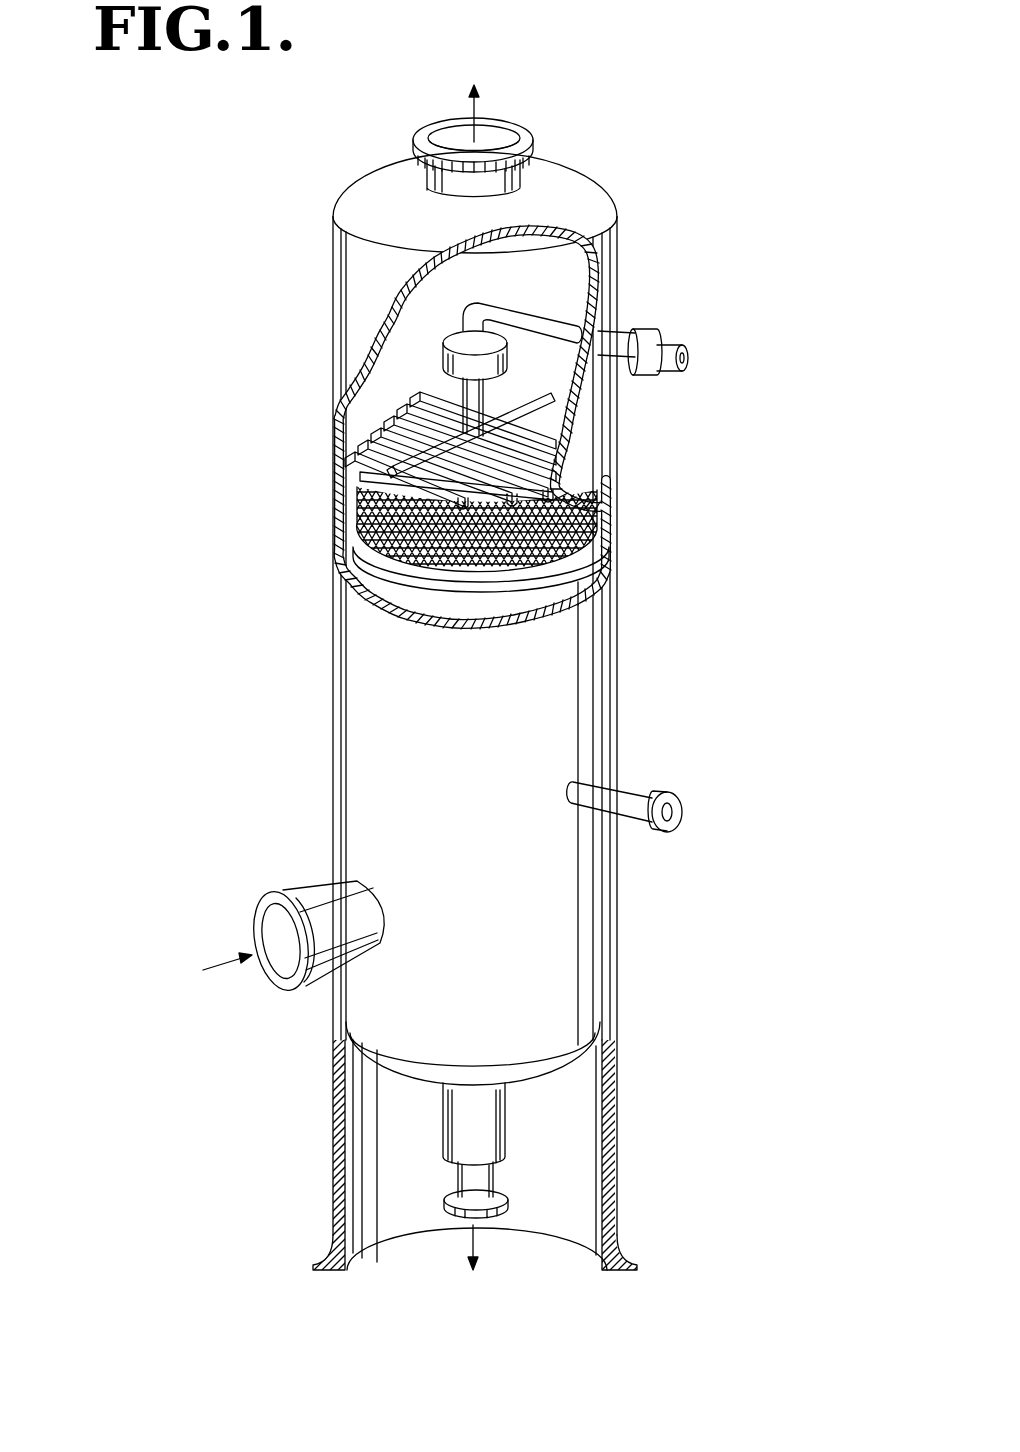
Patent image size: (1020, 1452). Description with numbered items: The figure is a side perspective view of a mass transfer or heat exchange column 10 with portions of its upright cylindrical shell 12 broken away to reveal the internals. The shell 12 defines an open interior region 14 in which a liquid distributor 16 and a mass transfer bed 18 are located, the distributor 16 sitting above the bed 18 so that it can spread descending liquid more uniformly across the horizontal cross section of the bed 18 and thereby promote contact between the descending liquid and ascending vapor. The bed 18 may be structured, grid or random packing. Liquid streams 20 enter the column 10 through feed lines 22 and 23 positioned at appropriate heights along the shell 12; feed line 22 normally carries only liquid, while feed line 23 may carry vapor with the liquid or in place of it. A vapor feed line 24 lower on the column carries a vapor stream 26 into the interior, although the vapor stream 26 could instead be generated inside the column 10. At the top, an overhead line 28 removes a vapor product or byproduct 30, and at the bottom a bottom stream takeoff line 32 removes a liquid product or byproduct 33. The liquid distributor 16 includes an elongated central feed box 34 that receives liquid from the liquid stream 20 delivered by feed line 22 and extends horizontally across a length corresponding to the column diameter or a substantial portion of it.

The mass transfer column 10 is at (658, 137).
The cylindrical shell 12 is at (616, 246).
The open interior region 14 is at (551, 265).
The liquid distributor 16 is at (404, 412).
The mass transfer bed 18 is at (598, 507).
The liquid stream 20 is at (693, 367).
The feed line 22 is at (630, 328).
The feed line 23 is at (640, 783).
The vapor feed line 24 is at (313, 890).
The vapor stream 26 is at (228, 965).
The overhead line 28 is at (527, 134).
The vapor product or byproduct 30 is at (478, 112).
The bottom stream takeoff line 32 is at (500, 1118).
The liquid product or byproduct 33 is at (478, 1245).
The central feed box 34 is at (525, 400).